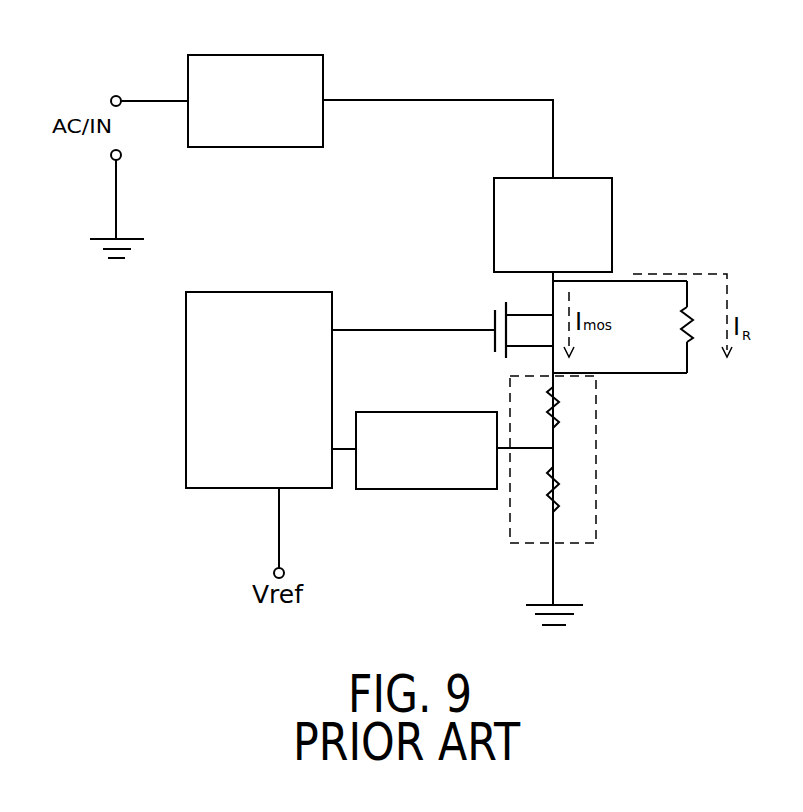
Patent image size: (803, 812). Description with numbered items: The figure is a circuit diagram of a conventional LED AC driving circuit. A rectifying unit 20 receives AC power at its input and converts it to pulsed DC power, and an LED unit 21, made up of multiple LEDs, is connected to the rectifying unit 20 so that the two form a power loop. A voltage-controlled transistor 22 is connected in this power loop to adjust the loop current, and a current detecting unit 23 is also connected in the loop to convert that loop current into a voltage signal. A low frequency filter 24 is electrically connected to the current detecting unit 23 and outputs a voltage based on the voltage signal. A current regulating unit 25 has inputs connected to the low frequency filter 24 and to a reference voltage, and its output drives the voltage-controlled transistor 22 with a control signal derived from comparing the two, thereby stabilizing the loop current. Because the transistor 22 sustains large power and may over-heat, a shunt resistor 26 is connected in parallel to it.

The rectifying unit 20 is at (270, 55).
The LED unit 21 is at (583, 178).
The voltage-controlled transistor 22 is at (494, 345).
The current detecting unit 23 is at (596, 456).
The low frequency filter 24 is at (430, 489).
The current regulating unit 25 is at (186, 443).
The shunt resistor 26 is at (689, 345).